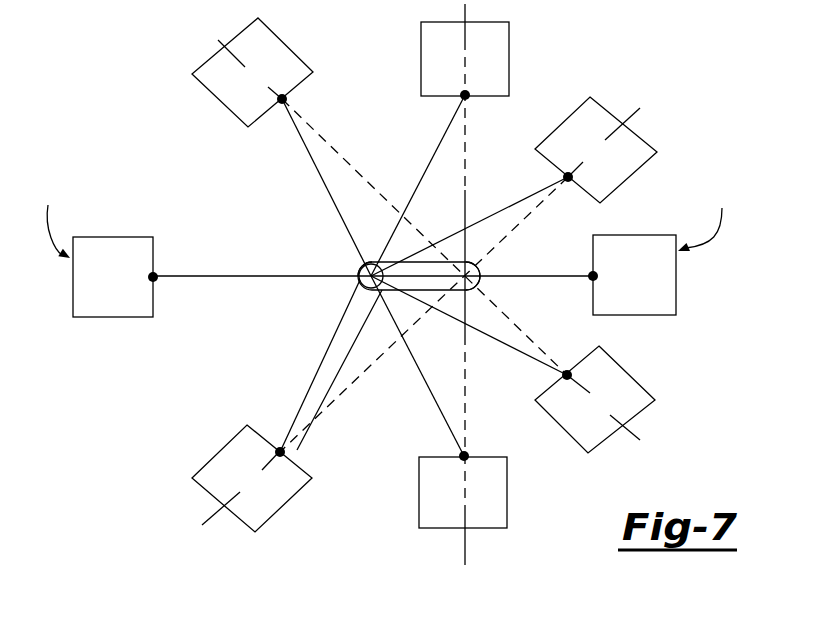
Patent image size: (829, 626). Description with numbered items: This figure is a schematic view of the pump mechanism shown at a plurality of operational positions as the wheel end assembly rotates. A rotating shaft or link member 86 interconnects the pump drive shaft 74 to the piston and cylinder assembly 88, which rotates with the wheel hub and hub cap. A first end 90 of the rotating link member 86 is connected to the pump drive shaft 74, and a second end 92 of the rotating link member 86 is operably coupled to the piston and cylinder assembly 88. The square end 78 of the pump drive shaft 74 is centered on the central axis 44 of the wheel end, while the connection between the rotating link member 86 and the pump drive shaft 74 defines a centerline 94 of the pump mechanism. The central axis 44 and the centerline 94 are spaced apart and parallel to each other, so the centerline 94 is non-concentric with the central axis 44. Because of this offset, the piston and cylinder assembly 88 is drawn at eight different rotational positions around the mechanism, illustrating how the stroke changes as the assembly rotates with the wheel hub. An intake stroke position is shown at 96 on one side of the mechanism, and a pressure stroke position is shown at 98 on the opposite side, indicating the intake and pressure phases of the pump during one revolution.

The piston and cylinder assembly 88 is at (231, 100).
The pump drive shaft 74 is at (415, 252).
The centerline 94 is at (362, 265).
The central axis 44 is at (497, 258).
The square end 78 is at (490, 286).
The first end 90 is at (348, 307).
The rotating shaft or link member 86 is at (316, 375).
The second end 92 is at (292, 450).
The intake stroke position 96 is at (693, 279).
The pressure stroke position 98 is at (103, 276).